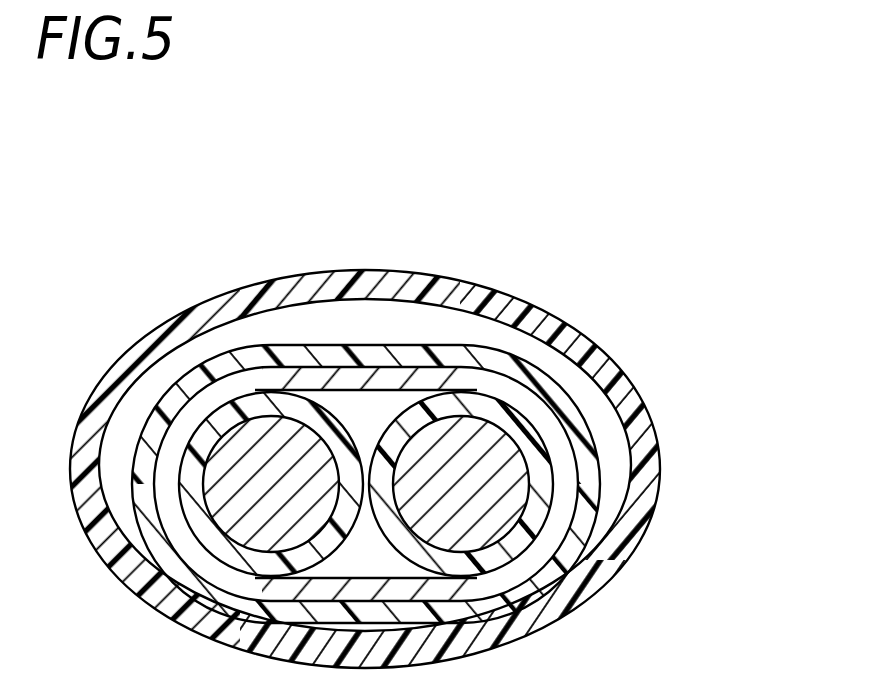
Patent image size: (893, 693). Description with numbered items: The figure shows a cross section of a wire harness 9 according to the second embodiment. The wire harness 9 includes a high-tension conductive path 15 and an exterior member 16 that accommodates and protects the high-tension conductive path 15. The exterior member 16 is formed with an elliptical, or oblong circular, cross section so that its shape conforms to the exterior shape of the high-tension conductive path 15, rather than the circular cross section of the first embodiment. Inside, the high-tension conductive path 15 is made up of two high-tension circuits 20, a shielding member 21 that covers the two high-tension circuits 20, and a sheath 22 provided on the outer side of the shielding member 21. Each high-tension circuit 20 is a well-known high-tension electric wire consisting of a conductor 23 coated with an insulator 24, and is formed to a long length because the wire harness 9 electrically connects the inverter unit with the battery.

The wire harness 9 is at (553, 148).
The exterior member 16 is at (513, 293).
The high-tension conductive path 15 is at (517, 350).
The sheath 22 is at (436, 347).
The shielding member 21 is at (377, 378).
The high-tension circuit 20 is at (450, 357).
The insulator 24 is at (262, 400).
The conductor 23 is at (237, 440).